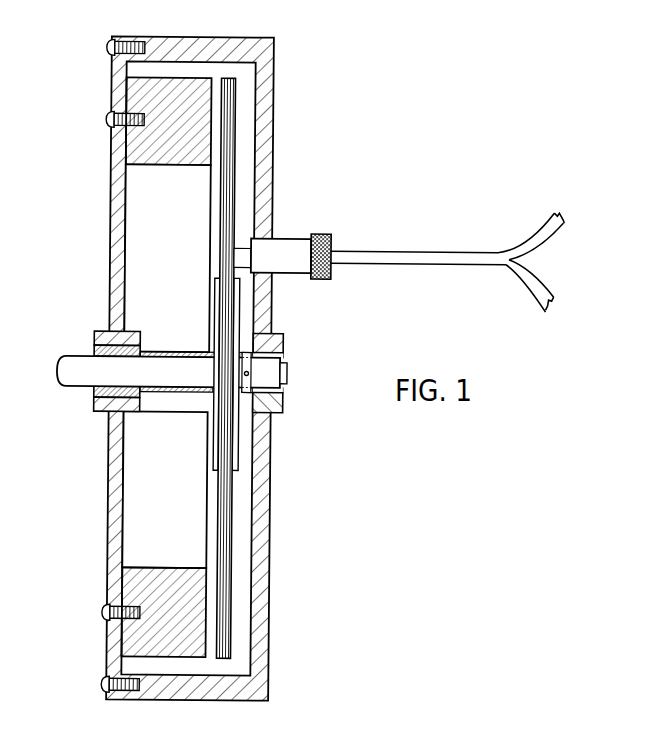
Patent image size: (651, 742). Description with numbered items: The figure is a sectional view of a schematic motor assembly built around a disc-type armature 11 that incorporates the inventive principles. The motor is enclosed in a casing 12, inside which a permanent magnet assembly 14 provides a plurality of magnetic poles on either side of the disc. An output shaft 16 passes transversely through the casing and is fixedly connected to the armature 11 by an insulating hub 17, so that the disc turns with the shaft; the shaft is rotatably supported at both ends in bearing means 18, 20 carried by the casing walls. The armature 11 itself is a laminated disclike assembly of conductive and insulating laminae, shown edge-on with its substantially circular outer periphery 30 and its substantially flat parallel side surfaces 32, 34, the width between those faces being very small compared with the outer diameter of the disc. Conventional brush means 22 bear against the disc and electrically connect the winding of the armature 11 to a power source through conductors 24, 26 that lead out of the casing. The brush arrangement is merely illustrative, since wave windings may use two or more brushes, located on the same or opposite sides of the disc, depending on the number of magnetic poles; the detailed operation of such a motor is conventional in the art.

The disc-type armature 11 is at (240, 188).
The casing 12 is at (195, 368).
The permanent magnet assembly 14 is at (193, 170).
The output shaft 16 is at (72, 388).
The insulating hub 17 is at (259, 321).
The bearing means 18 is at (131, 412).
The bearing means 20 is at (278, 414).
The brush means 22 is at (272, 266).
The conductor 24 is at (558, 221).
The conductor 26 is at (553, 296).
The outer periphery 30 is at (226, 78).
The side surface 32 is at (222, 231).
The side surface 34 is at (234, 517).